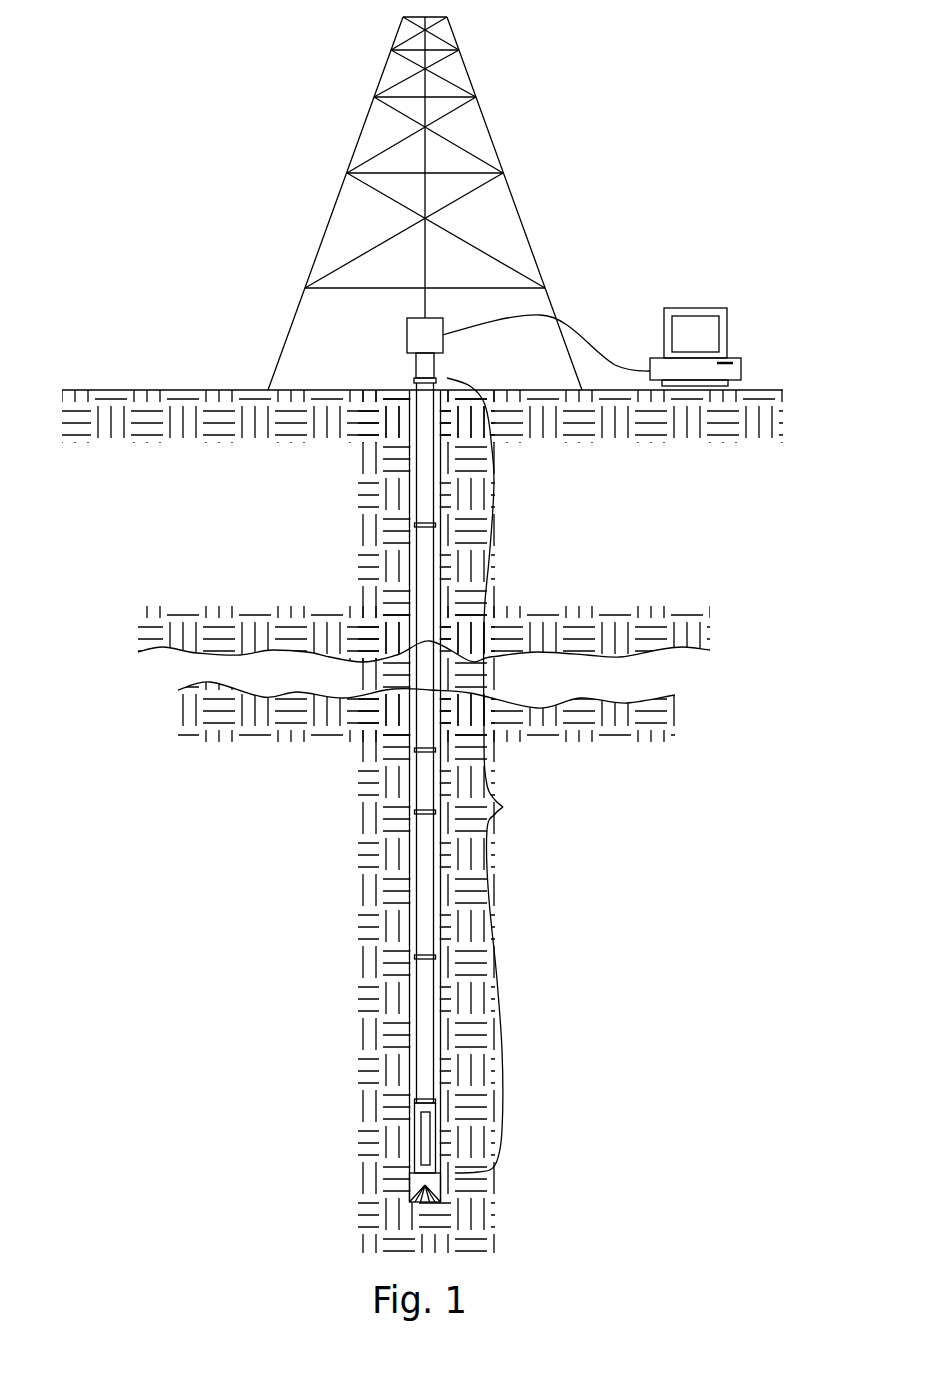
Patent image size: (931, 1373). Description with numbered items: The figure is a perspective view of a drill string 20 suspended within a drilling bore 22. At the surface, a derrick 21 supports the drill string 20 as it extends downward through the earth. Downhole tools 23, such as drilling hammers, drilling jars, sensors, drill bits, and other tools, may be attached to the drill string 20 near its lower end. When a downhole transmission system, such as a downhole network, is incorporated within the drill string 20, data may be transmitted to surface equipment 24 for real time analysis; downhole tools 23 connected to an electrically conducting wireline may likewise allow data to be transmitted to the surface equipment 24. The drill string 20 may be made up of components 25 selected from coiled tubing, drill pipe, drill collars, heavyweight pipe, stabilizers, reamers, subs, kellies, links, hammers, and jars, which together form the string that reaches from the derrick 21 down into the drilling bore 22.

The drill string 20 is at (503, 807).
The derrick 21 is at (518, 201).
The drilling bore 22 is at (408, 503).
The downhole tools 23 is at (420, 1107).
The surface equipment 24 is at (698, 332).
The components 25 is at (425, 413).